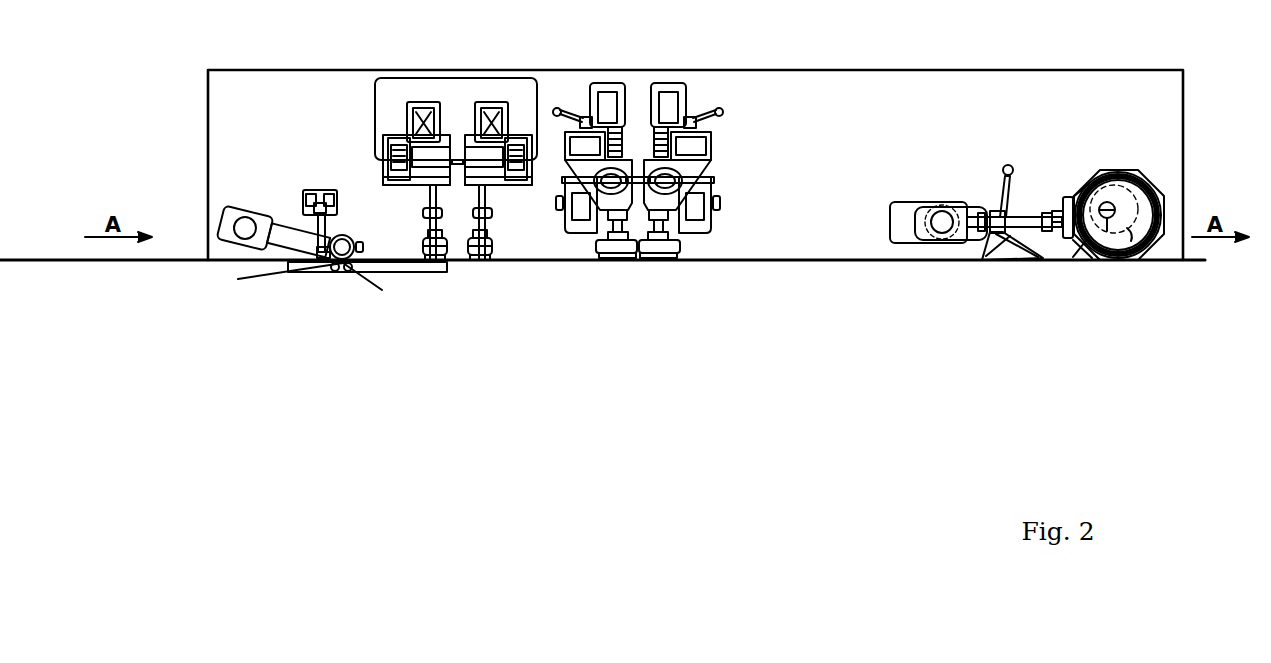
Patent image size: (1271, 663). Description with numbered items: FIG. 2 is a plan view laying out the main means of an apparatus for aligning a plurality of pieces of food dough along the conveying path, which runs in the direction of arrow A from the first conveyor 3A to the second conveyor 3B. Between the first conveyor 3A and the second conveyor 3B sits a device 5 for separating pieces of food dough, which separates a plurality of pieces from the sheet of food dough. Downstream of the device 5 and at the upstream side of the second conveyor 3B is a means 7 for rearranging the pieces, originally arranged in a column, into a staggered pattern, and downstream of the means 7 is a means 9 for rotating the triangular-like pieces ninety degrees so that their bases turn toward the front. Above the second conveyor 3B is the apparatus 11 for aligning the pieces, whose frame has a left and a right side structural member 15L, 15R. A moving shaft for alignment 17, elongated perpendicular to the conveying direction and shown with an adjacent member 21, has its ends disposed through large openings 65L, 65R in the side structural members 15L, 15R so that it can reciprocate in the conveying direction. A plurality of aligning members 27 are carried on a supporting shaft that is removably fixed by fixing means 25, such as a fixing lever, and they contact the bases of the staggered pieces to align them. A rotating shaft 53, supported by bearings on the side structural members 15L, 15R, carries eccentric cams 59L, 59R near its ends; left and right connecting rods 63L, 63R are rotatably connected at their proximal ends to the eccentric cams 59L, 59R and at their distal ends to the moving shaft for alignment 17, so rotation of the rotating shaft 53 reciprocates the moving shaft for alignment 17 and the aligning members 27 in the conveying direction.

The first conveyor 3A is at (252, 282).
The second conveyor 3B is at (383, 288).
The device for separating pieces of food dough 5 is at (280, 204).
The means for rearranging the pieces of food dough in a staggered pattern 7 is at (510, 88).
The means for rotating the pieces of food dough 9 is at (745, 104).
The apparatus for aligning a plurality of pieces of food dough 11 is at (1130, 198).
The right side structural member 15R is at (695, 136).
The left side structural member 15L is at (847, 80).
The moving shaft for alignment 17 is at (945, 240).
The roller support body 21 is at (923, 200).
The fixing means 25 is at (1003, 178).
The aligning members 27 is at (1007, 260).
The rotating shaft 53 is at (1077, 259).
The right eccentric cam 59R is at (1141, 243).
The left eccentric cam 59L is at (1120, 262).
The right connecting rod 63R is at (1028, 166).
The left connecting rod 63L is at (1033, 217).
The right large opening 65R is at (860, 212).
The left large opening 65L is at (890, 217).